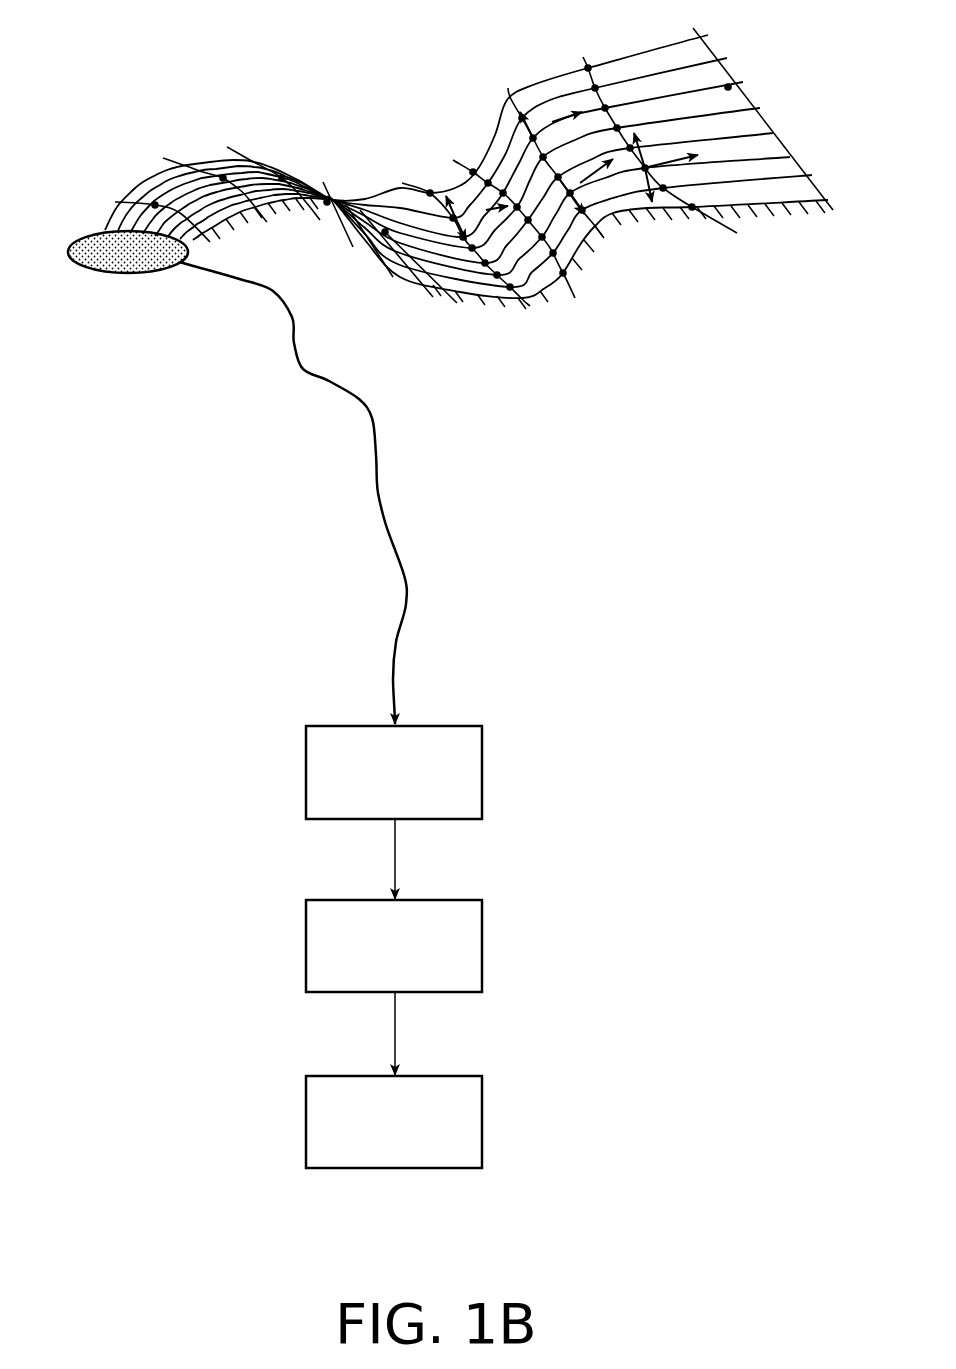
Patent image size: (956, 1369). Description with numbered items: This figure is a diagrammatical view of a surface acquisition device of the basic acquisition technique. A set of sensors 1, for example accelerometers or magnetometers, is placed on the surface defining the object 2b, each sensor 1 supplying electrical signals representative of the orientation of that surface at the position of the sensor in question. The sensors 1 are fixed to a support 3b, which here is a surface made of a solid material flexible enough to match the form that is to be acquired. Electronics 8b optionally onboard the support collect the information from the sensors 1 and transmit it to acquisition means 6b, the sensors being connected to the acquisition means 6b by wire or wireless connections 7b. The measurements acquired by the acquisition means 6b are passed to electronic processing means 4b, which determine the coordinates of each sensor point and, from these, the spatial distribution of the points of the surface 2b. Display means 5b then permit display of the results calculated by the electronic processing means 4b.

The sensors 1 is at (583, 107).
The surface defining the object 2b is at (762, 208).
The support 3b is at (660, 70).
The electronic processing means 4b is at (469, 950).
The display means 5b is at (469, 1127).
The acquisition means 6b is at (469, 775).
The wire or wireless connections 7b is at (385, 519).
The onboard electronics 8b is at (130, 268).